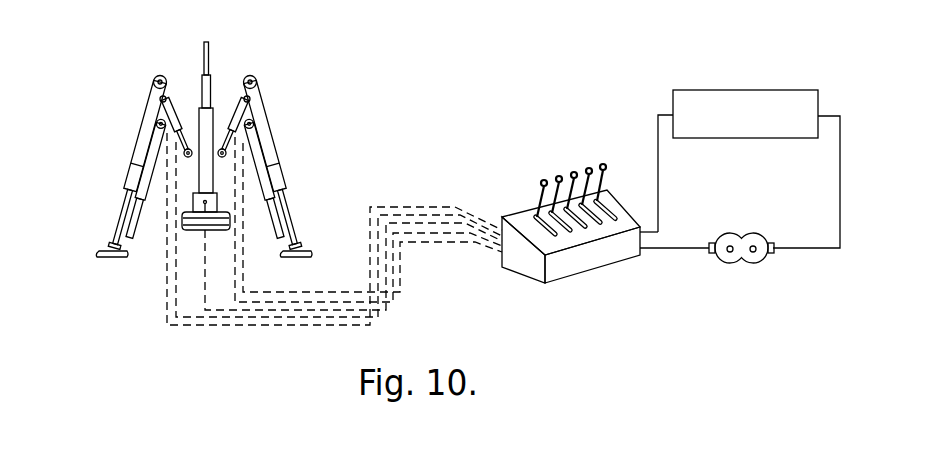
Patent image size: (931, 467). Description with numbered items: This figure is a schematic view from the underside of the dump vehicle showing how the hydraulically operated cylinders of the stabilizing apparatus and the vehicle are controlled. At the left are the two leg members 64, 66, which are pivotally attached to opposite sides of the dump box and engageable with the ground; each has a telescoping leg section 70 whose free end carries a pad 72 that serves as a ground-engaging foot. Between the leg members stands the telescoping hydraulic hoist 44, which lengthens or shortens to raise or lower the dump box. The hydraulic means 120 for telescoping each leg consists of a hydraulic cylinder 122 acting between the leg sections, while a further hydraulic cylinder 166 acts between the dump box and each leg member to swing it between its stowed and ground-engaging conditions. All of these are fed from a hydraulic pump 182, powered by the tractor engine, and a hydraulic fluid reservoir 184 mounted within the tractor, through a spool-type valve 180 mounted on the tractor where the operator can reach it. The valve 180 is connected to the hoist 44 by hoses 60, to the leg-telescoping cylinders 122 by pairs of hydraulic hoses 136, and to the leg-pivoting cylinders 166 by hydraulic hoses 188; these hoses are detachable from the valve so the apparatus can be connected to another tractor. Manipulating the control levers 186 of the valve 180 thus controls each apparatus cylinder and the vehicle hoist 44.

The hydraulic hoist 44 is at (215, 80).
The hoses 60 is at (207, 247).
The leg member 64 is at (272, 100).
The leg member 66 is at (146, 98).
The leg section 70 is at (122, 198).
The pad 72 is at (100, 250).
The hydraulic means for slidably moving 120 is at (147, 218).
The hydraulic cylinder 122 is at (135, 167).
The hydraulic hoses 136 is at (310, 296).
The hydraulic cylinder 166 is at (183, 120).
The spool-type valve 180 is at (565, 283).
The hydraulic pump 182 is at (743, 233).
The hydraulic fluid reservoir 184 is at (760, 90).
The control levers 186 is at (559, 158).
The hydraulic hoses 188 is at (423, 217).